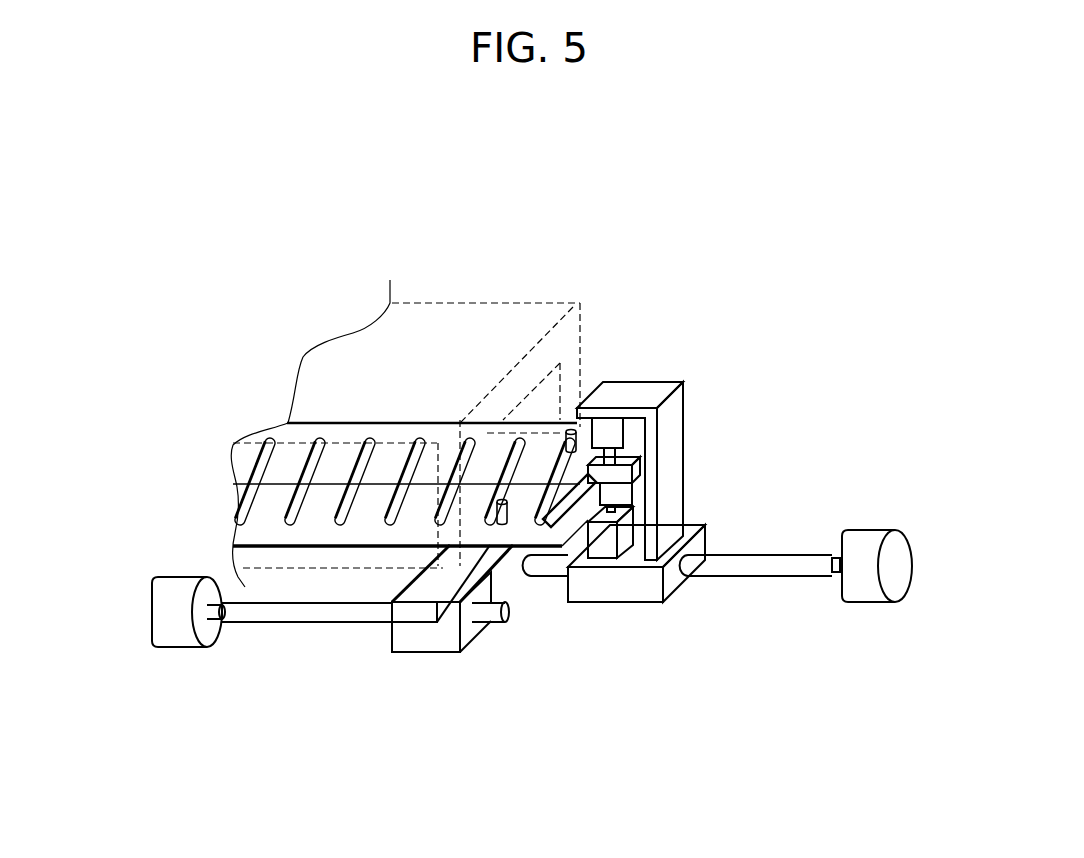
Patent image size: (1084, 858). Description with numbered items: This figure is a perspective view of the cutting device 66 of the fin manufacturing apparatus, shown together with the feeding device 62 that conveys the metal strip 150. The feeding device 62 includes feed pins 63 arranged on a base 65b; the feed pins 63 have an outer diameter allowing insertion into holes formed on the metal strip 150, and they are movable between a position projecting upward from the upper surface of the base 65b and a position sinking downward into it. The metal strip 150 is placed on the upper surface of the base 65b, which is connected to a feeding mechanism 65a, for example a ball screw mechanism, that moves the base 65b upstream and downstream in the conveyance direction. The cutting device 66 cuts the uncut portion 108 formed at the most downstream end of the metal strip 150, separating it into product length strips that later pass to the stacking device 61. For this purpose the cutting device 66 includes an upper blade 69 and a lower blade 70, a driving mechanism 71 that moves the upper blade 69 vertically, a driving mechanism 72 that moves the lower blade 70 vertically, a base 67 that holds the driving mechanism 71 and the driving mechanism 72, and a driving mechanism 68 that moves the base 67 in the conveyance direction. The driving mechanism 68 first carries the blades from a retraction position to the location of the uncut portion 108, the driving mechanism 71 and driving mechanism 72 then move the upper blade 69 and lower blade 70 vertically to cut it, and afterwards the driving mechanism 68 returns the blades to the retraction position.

The stacking device 61 is at (470, 318).
The metal strip 150 is at (248, 535).
The feeding device 62 is at (404, 712).
The feed pins 63 is at (580, 418).
The feeding mechanism 65a is at (170, 620).
The base 65b is at (430, 628).
The cutting device 66 is at (623, 694).
The base 67 is at (690, 565).
The driving mechanism 68 is at (873, 541).
The upper blade 69 is at (636, 470).
The lower blade 70 is at (634, 490).
The driving mechanism 71 is at (627, 432).
The driving mechanism 72 is at (605, 543).
The uncut portion 108 is at (600, 505).